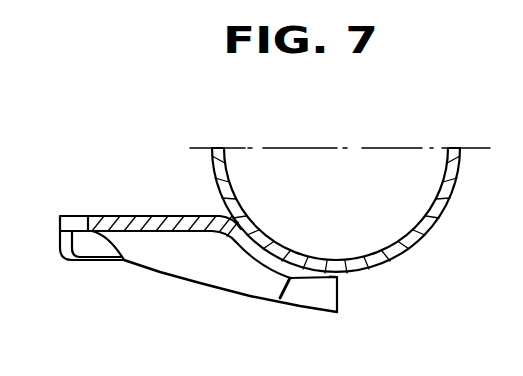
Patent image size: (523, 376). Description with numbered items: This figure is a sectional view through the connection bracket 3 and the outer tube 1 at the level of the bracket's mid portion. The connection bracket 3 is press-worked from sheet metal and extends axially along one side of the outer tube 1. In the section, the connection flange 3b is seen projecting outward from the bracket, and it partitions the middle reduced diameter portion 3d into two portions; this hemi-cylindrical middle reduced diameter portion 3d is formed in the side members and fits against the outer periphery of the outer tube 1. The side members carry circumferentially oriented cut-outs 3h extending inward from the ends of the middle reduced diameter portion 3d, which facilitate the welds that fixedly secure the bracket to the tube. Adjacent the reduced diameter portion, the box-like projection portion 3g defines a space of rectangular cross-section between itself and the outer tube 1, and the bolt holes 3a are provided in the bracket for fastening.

The outer tube 1 is at (447, 173).
The connection bracket 3 is at (223, 258).
The bolt holes 3a is at (108, 230).
The connection flange 3b is at (78, 215).
The middle reduced diameter portion 3d is at (277, 302).
The box-like projection portion 3g is at (223, 290).
The cut-outs 3h is at (338, 279).